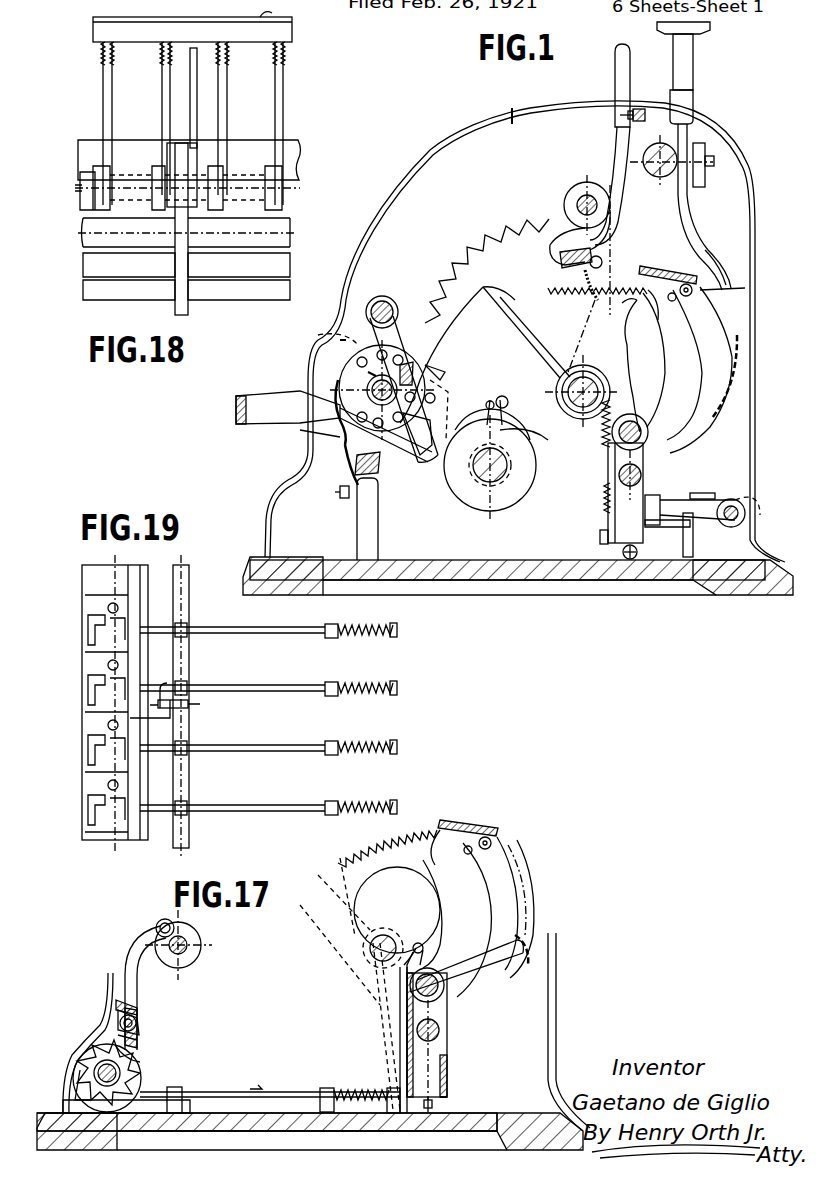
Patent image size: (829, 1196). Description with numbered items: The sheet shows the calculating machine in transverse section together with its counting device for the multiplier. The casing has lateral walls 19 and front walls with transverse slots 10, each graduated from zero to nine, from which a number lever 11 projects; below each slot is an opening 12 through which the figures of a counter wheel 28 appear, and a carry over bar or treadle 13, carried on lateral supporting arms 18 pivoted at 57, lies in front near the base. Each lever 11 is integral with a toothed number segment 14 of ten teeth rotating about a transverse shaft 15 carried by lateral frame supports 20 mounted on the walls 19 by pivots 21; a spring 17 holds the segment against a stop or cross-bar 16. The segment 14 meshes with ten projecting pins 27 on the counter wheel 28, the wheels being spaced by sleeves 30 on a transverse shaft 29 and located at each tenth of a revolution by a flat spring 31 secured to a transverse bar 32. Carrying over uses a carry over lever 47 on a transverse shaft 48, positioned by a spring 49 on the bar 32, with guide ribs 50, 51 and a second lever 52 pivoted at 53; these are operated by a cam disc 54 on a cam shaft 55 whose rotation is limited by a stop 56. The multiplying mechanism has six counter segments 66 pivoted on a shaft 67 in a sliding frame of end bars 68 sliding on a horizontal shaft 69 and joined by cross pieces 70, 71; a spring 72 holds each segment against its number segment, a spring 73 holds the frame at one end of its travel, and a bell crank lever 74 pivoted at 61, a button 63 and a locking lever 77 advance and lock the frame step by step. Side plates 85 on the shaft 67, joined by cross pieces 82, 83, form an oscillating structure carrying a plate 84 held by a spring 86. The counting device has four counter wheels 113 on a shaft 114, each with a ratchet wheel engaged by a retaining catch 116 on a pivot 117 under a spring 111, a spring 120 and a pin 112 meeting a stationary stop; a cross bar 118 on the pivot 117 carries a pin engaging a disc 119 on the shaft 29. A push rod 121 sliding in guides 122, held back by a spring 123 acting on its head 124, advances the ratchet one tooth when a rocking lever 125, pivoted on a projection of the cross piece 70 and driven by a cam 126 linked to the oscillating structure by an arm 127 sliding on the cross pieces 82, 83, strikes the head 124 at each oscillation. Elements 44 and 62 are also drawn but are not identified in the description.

In FIG. 1, the transverse slots 10 is at (368, 222).
In FIG. 1, the number lever 11 is at (618, 136).
In FIG. 1, the opening 12 is at (340, 340).
In FIG. 1, the carry over bar or treadle 13 is at (256, 395).
In FIG. 1, the toothed number segment 14 is at (480, 258).
In FIG. 1, the transverse shaft 15 is at (584, 372).
In FIG. 17, the transverse shaft 15 is at (375, 958).
In FIG. 1, the stop or cross-bar 16 is at (566, 256).
In FIG. 1, the spring 17 is at (520, 283).
In FIG. 1, the lateral supporting arm 18 is at (735, 500).
In FIG. 1, the lateral walls 19 is at (512, 112).
In FIG. 1, the lateral frame support 20 is at (566, 208).
In FIG. 1, the pivot 21 is at (580, 195).
In FIG. 1, the projecting pins 27 is at (367, 345).
In FIG. 1, the counter wheel or drum 28 is at (358, 343).
In FIG. 1, the transverse shaft 29 is at (340, 413).
In FIG. 19, the transverse shaft 29 is at (189, 783).
In FIG. 17, the transverse shaft 29 is at (190, 950).
In FIG. 1, the sleeves 30 is at (366, 386).
In FIG. 1, the flat spring 31 is at (340, 437).
In FIG. 1, the transverse bar 32 is at (352, 493).
In FIG. 1, the stop block 44 is at (640, 108).
In FIG. 1, the carry over lever 47 is at (442, 410).
In FIG. 1, the transverse shaft 48 is at (383, 296).
In FIG. 1, the spring 49 is at (380, 465).
In FIG. 1, the guide rib 50 is at (397, 313).
In FIG. 1, the guide rib 51 is at (416, 372).
In FIG. 1, the second lever 52 is at (358, 442).
In FIG. 1, the pivot 53 is at (430, 418).
In FIG. 1, the cam disc 54 is at (522, 422).
In FIG. 1, the cam shaft 55 is at (476, 505).
In FIG. 1, the stop 56 is at (500, 396).
In FIG. 1, the pivot 57 is at (746, 512).
In FIG. 1, the pivot 61 is at (712, 158).
In FIG. 1, the shaft 62 is at (659, 179).
In FIG. 1, the button 63 is at (703, 28).
In FIG. 1, the counter segment 66 is at (650, 357).
In FIG. 18, the counter segment 66 is at (275, 92).
In FIG. 17, the counter segment 66 is at (435, 888).
In FIG. 1, the shaft 67 is at (648, 430).
In FIG. 18, the shaft 67 is at (83, 189).
In FIG. 17, the shaft 67 is at (440, 992).
In FIG. 1, the end bars 68 is at (658, 447).
In FIG. 17, the end bars 68 is at (442, 1050).
In FIG. 1, the horizontal shaft 69 is at (642, 475).
In FIG. 18, the horizontal shaft 69 is at (95, 231).
In FIG. 17, the horizontal shaft 69 is at (440, 1030).
In FIG. 1, the cross piece 70 is at (600, 535).
In FIG. 18, the cross piece 70 is at (88, 290).
In FIG. 1, the cross piece 71 is at (672, 503).
In FIG. 18, the cross piece 71 is at (88, 262).
In FIG. 17, the cross piece 71 is at (447, 1075).
In FIG. 1, the spring 72 is at (604, 492).
In FIG. 1, the spring 73 is at (621, 552).
In FIG. 1, the bell crank lever 74 is at (727, 237).
In FIG. 1, the lever 77 is at (695, 522).
In FIG. 1, the cross piece 82 is at (678, 268).
In FIG. 18, the cross piece 82 is at (265, 19).
In FIG. 17, the cross piece 82 is at (452, 822).
In FIG. 1, the cross piece 83 is at (722, 400).
In FIG. 18, the cross piece 83 is at (293, 145).
In FIG. 17, the cross piece 83 is at (500, 963).
In FIG. 1, the plate 84 is at (692, 286).
In FIG. 17, the plate 84 is at (490, 839).
In FIG. 1, the side plates 85 is at (722, 341).
In FIG. 17, the side plates 85 is at (525, 900).
In FIG. 1, the spring 86 is at (700, 303).
In FIG. 17, the spring 86 is at (515, 850).
In FIG. 17, the spring 111 is at (118, 1016).
In FIG. 19, the pin 112 is at (98, 702).
In FIG. 17, the pin 112 is at (92, 1045).
In FIG. 19, the counter wheel 113 is at (88, 722).
In FIG. 17, the counter wheel 113 is at (130, 1060).
In FIG. 17, the shaft 114 is at (135, 1045).
In FIG. 17, the retaining catch 116 is at (140, 1028).
In FIG. 17, the pivot 117 is at (143, 1037).
In FIG. 19, the cross bar 118 is at (135, 642).
In FIG. 17, the cross bar 118 is at (140, 1003).
In FIG. 19, the disc 119 is at (200, 705).
In FIG. 17, the disc 119 is at (196, 934).
In FIG. 17, the spring 120 is at (265, 1050).
In FIG. 19, the push rod 121 is at (276, 773).
In FIG. 17, the push rod 121 is at (296, 1076).
In FIG. 19, the guides 122 is at (325, 690).
In FIG. 17, the guides 122 is at (357, 1090).
In FIG. 19, the spring 123 is at (355, 715).
In FIG. 17, the spring 123 is at (375, 1090).
In FIG. 19, the head 124 is at (392, 638).
In FIG. 17, the head 124 is at (432, 1108).
In FIG. 18, the rocking lever 125 is at (180, 305).
In FIG. 17, the rocking lever 125 is at (400, 1025).
In FIG. 17, the cam 126 is at (425, 930).
In FIG. 18, the arm 127 is at (192, 105).
In FIG. 17, the arm 127 is at (478, 945).